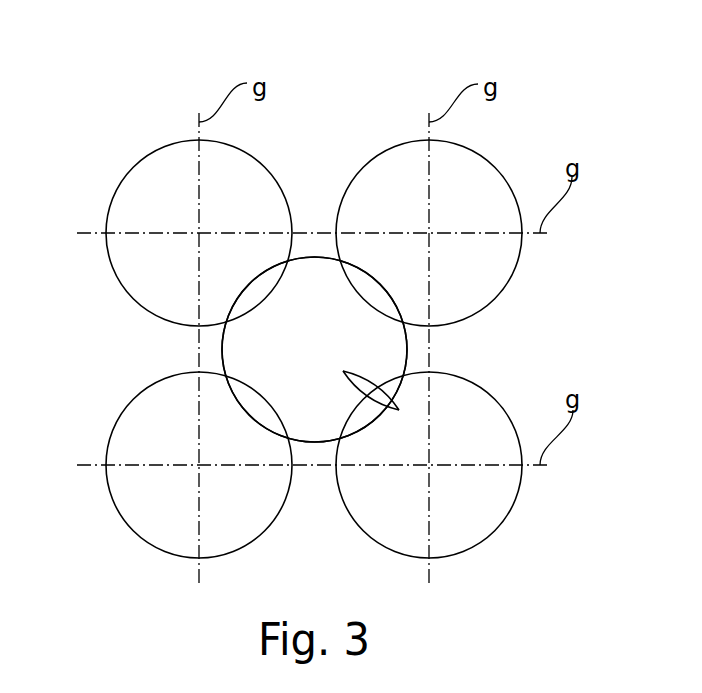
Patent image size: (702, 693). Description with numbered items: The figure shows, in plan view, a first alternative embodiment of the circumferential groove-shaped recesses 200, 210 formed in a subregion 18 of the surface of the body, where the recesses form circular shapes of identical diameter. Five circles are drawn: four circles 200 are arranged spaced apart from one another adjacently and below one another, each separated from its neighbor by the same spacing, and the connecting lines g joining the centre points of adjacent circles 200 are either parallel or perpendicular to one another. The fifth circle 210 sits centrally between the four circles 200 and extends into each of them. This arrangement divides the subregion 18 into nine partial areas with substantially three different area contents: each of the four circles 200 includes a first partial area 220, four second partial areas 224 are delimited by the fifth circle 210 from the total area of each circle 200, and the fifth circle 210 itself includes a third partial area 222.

The subregion 18 is at (312, 347).
The circumferential groove-shaped recesses 200 is at (498, 173).
The fifth circle 210 is at (316, 443).
The first partial area 220 is at (158, 497).
The third partial area 222 is at (314, 349).
The second partial areas 224 is at (372, 409).